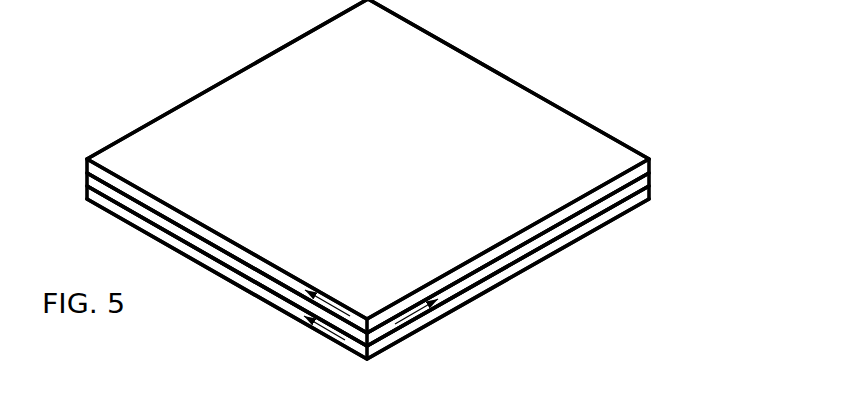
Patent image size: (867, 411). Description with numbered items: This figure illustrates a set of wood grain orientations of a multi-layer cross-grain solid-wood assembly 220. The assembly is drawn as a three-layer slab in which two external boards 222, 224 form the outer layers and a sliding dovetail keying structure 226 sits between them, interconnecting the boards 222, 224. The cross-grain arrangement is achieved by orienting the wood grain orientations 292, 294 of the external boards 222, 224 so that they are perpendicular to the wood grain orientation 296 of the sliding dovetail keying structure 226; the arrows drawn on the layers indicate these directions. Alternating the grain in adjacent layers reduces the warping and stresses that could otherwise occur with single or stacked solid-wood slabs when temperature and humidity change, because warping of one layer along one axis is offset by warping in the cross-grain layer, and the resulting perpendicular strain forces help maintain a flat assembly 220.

The multi-layer cross-grain solid-wood assembly 220 is at (699, 231).
The external board 222 is at (652, 162).
The external board 224 is at (651, 190).
The sliding dovetail keying structure 226 is at (651, 178).
The wood grain orientation 292 is at (333, 303).
The wood grain orientation 294 is at (335, 340).
The wood grain orientation 296 is at (400, 322).